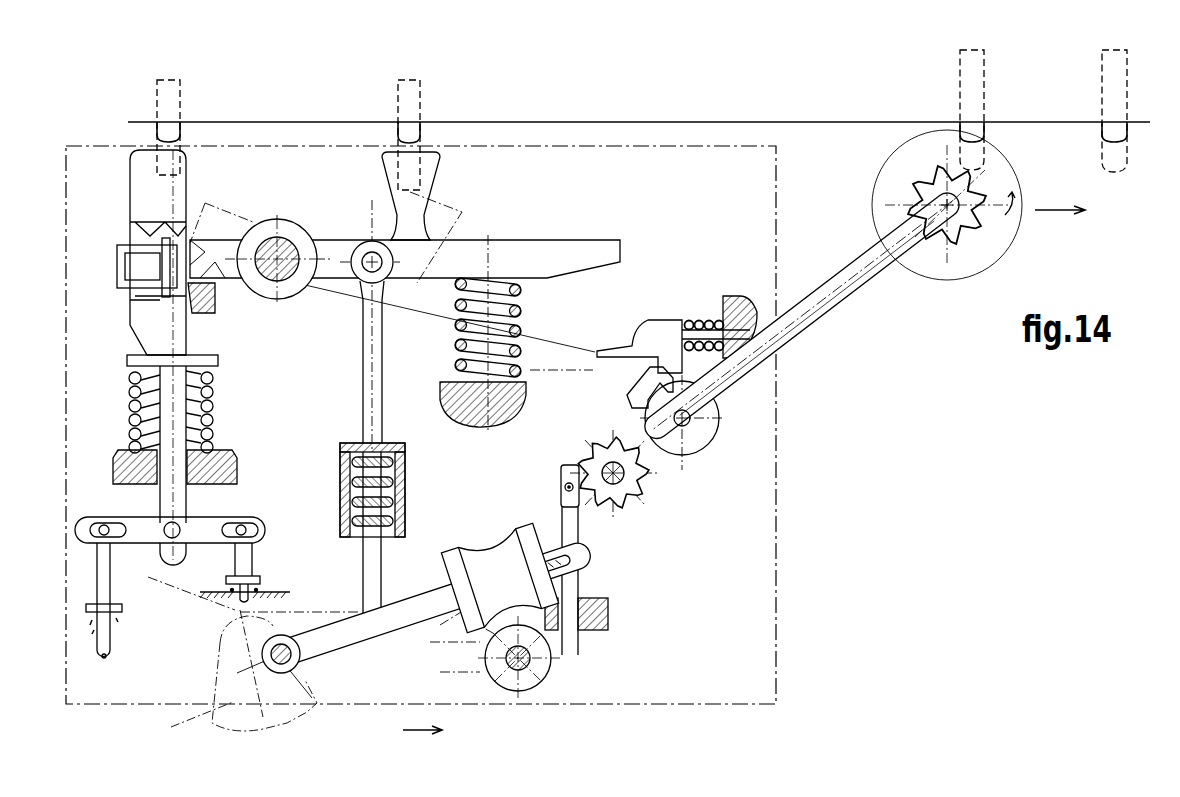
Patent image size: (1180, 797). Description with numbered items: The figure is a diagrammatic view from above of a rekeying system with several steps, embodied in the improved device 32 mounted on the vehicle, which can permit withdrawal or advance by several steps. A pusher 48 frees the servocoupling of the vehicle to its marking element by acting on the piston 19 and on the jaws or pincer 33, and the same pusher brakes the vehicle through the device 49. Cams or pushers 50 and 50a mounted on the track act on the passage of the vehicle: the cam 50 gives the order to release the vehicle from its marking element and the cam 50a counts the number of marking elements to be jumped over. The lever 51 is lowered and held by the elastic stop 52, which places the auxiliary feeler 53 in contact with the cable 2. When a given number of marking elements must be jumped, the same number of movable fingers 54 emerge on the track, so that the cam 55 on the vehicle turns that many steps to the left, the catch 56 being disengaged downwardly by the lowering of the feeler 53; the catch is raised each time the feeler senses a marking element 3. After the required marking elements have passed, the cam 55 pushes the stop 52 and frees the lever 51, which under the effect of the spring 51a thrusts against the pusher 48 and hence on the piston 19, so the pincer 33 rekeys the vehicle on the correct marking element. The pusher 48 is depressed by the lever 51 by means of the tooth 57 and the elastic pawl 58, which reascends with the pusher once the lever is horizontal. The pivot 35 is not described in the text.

The cable 2 is at (485, 675).
The marking element 3 is at (553, 670).
The piston 19 is at (250, 561).
The improved device 32 is at (395, 707).
The jaw 33 is at (514, 693).
The pivot bell crank 35 is at (218, 646).
The pusher 48 is at (150, 337).
The braking device 49 is at (104, 580).
The cam or pusher 50 is at (166, 110).
The cam or pusher 50a is at (411, 103).
The lever 51 is at (488, 256).
The spring 51a is at (530, 302).
The elastic stop 52 is at (652, 345).
The auxiliary feeler 53 is at (485, 558).
The movable finger 54 is at (968, 107).
The cam 55 is at (641, 400).
The catch 56 is at (568, 470).
The tooth 57 is at (222, 278).
The elastic pawl 58 is at (118, 278).